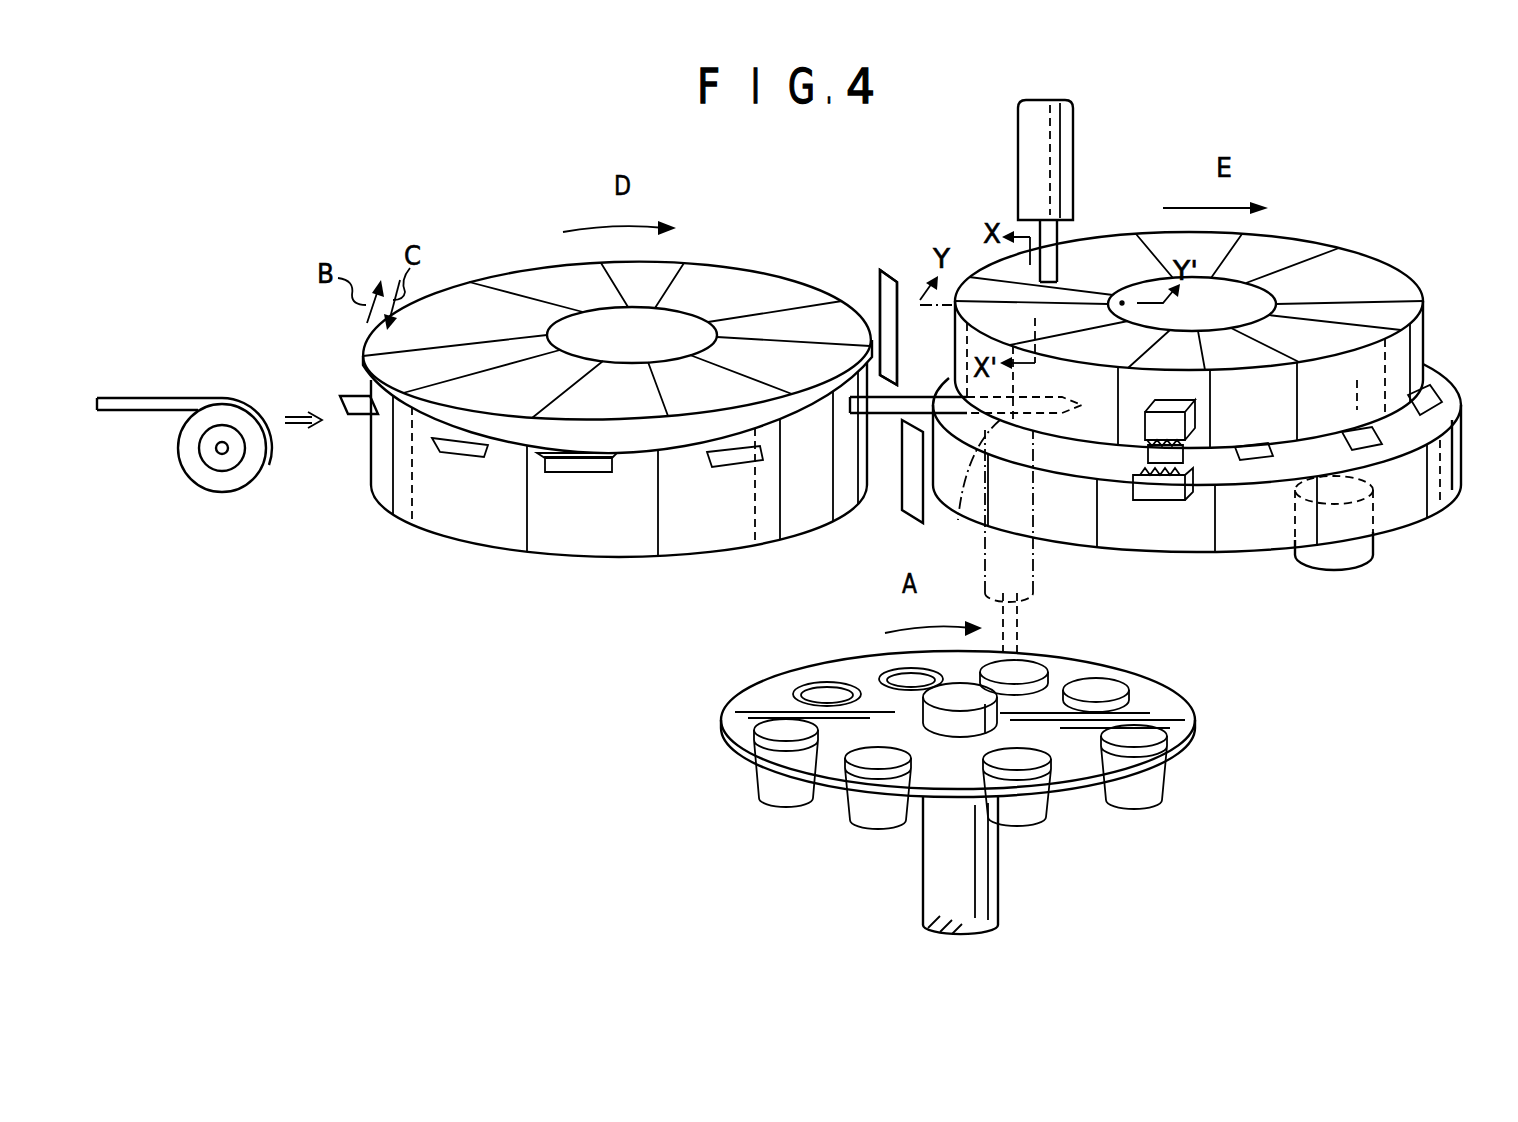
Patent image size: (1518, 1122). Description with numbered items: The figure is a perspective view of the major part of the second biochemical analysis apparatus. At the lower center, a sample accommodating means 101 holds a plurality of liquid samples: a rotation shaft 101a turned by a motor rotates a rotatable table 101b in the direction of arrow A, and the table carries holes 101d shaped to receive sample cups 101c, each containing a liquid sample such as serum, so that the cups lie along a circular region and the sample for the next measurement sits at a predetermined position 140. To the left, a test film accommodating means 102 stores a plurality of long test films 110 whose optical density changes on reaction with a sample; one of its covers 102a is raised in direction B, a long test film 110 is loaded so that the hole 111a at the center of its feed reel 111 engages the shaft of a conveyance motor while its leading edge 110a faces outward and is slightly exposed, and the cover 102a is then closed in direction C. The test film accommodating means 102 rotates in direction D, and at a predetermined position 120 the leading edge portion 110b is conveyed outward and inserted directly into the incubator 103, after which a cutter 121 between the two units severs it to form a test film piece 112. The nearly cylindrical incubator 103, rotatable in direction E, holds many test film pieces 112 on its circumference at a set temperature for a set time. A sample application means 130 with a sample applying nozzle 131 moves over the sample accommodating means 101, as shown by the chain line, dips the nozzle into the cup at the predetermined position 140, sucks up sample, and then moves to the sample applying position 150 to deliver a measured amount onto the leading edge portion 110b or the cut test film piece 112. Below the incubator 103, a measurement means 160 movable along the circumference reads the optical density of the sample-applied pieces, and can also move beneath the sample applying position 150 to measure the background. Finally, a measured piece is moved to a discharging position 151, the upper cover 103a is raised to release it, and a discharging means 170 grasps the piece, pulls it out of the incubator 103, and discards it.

The sample accommodating means 101 is at (1200, 608).
The rotation shaft 101a is at (985, 874).
The rotatable table 101b is at (770, 693).
The sample cups 101c is at (1128, 690).
The holes 101d is at (892, 668).
The test film accommodating means 102 is at (527, 245).
The covers 102a is at (452, 306).
The incubator 103 is at (1336, 226).
The upper cover 103a is at (1345, 330).
The long test film 110 is at (220, 414).
The leading edge 110a is at (100, 398).
The leading edge portion 110b is at (157, 398).
The feed reel 111 is at (198, 465).
The hole 111a is at (216, 457).
The test film piece 112 is at (1455, 410).
The predetermined position 120 is at (912, 252).
The cutter 121 is at (877, 273).
The sample application means 130 is at (1074, 172).
The sample applying nozzle 131 is at (1058, 232).
The predetermined position 140 is at (1058, 640).
The sample applying position 150 is at (1004, 272).
The discharging position 151 is at (1202, 342).
The measurement means 160 is at (1370, 550).
The discharging means 170 is at (1200, 478).